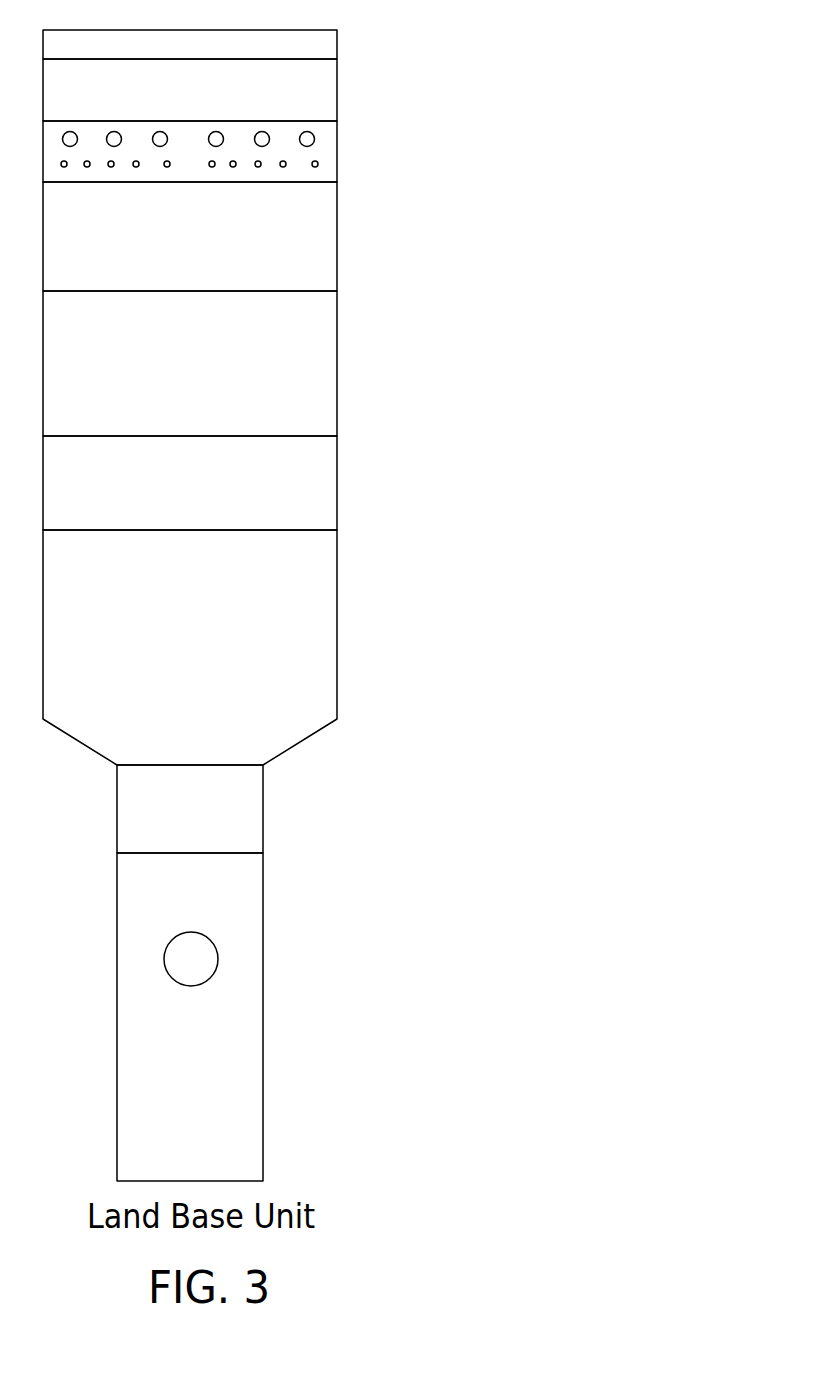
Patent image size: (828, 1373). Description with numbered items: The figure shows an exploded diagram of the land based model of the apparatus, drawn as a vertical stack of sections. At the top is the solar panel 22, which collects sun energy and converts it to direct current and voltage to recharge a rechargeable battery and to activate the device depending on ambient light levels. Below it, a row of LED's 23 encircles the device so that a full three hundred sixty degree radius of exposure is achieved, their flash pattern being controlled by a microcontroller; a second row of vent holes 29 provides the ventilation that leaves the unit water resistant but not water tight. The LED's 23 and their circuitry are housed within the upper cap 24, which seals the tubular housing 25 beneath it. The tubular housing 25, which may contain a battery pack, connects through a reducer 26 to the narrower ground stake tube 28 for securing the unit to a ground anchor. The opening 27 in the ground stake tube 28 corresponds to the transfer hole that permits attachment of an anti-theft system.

The solar panel 22 is at (337, 43).
The LED's 23 is at (314, 136).
The vent holes 29 is at (318, 163).
The upper cap 24 is at (337, 178).
The tubular housing 25 is at (337, 338).
The reducer 26 is at (337, 582).
The mounting hole 27 is at (191, 959).
The ground stake tube 28 is at (215, 1110).